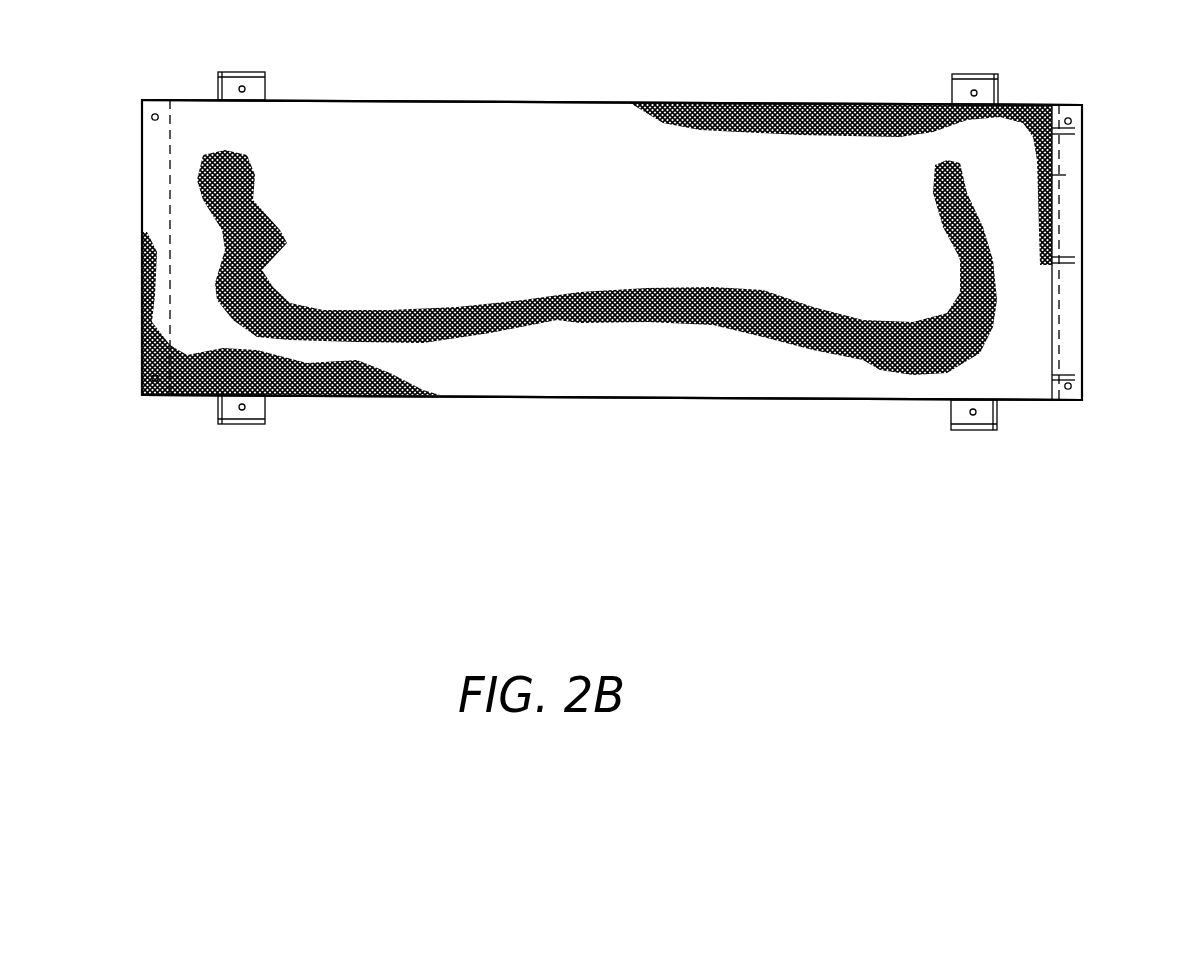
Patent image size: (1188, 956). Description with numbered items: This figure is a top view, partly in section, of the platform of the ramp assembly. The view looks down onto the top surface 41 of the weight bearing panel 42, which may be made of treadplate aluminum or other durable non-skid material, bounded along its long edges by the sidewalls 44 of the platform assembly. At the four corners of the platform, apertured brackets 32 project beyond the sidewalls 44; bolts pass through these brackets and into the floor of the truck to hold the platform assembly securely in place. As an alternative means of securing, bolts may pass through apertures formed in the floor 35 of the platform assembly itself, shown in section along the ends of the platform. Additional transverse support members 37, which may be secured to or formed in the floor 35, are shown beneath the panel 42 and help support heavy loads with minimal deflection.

The apertured bracket 32 is at (265, 76).
The floor of the platform assembly 35 is at (142, 115).
The transverse support member 37 is at (172, 114).
The top surface 41 is at (657, 240).
The weight bearing panel 42 is at (672, 103).
The sidewall 44 is at (417, 100).